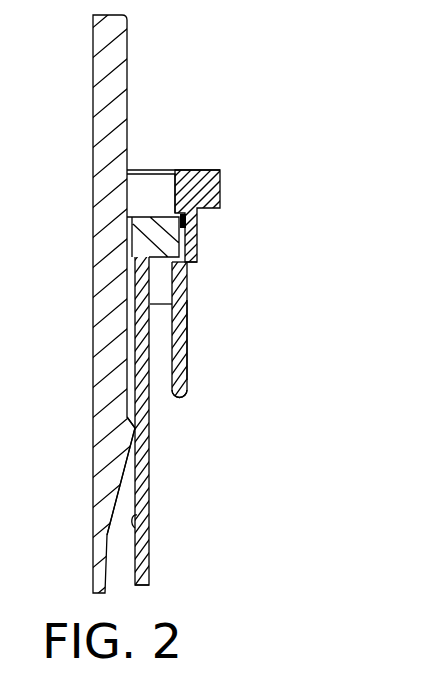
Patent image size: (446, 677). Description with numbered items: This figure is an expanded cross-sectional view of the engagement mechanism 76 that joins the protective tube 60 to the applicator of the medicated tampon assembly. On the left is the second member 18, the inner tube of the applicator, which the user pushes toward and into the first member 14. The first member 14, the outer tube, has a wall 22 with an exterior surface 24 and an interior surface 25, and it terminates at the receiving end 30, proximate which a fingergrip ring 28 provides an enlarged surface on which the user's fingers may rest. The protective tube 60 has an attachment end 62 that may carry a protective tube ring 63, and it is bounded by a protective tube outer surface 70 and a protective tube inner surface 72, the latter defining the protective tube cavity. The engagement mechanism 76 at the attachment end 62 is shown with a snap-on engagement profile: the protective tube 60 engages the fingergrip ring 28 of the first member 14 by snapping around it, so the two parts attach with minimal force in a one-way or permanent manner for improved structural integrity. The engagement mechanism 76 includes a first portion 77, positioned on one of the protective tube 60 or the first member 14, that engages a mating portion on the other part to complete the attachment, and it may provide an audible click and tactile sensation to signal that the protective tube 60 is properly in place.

The first member 14 is at (160, 547).
The second member 18 is at (138, 60).
The wall 22 is at (148, 491).
The exterior surface 24 is at (150, 470).
The interior surface 25 is at (135, 528).
The fingergrip ring 28 is at (153, 232).
The receiving end 30 is at (172, 304).
The protective tube 60 is at (187, 368).
The attachment end 62 is at (203, 221).
The protective tube ring 63 is at (222, 158).
The protective tube outer surface 70 is at (187, 332).
The protective tube inner surface 72 is at (166, 375).
The engagement mechanism 76 is at (198, 227).
The first portion 77 is at (198, 261).